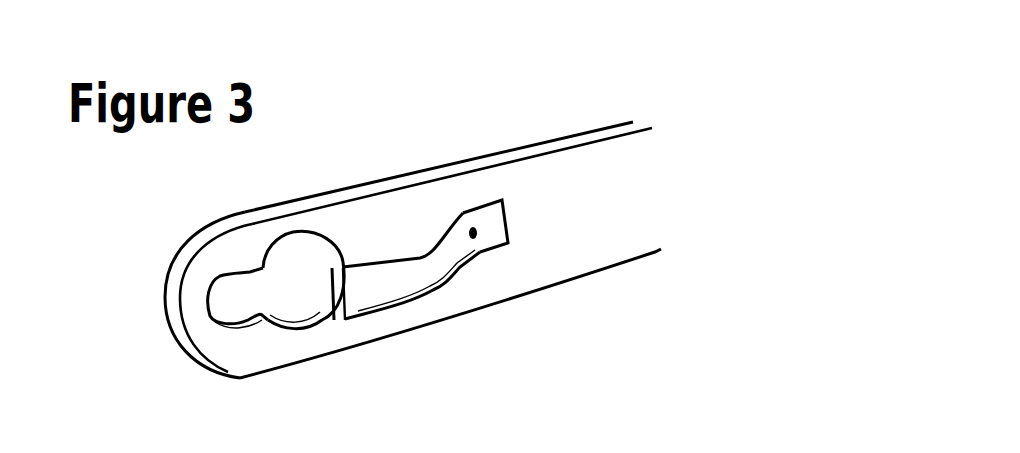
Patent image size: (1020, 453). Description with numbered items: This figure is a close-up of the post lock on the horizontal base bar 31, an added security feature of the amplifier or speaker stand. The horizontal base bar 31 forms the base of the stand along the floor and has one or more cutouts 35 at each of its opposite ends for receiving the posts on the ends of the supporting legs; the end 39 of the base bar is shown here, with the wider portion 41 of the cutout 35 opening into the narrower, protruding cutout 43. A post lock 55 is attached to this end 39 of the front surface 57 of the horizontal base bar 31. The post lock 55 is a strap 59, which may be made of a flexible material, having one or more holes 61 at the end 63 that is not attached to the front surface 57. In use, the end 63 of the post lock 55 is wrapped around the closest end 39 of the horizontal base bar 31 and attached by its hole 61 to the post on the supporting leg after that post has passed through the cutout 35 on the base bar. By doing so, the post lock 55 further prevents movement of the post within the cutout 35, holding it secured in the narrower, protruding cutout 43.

The horizontal base bar 31 is at (512, 133).
The cutout 35 is at (265, 343).
The end of the horizontal base bar 39 is at (172, 297).
The cam lobe 41 is at (300, 257).
The protruding cutout 43 is at (228, 302).
The post lock 55 is at (455, 296).
The front surface 57 is at (580, 253).
The strap 59 is at (385, 290).
The hole 61 is at (470, 226).
The end of the strap 63 is at (507, 210).